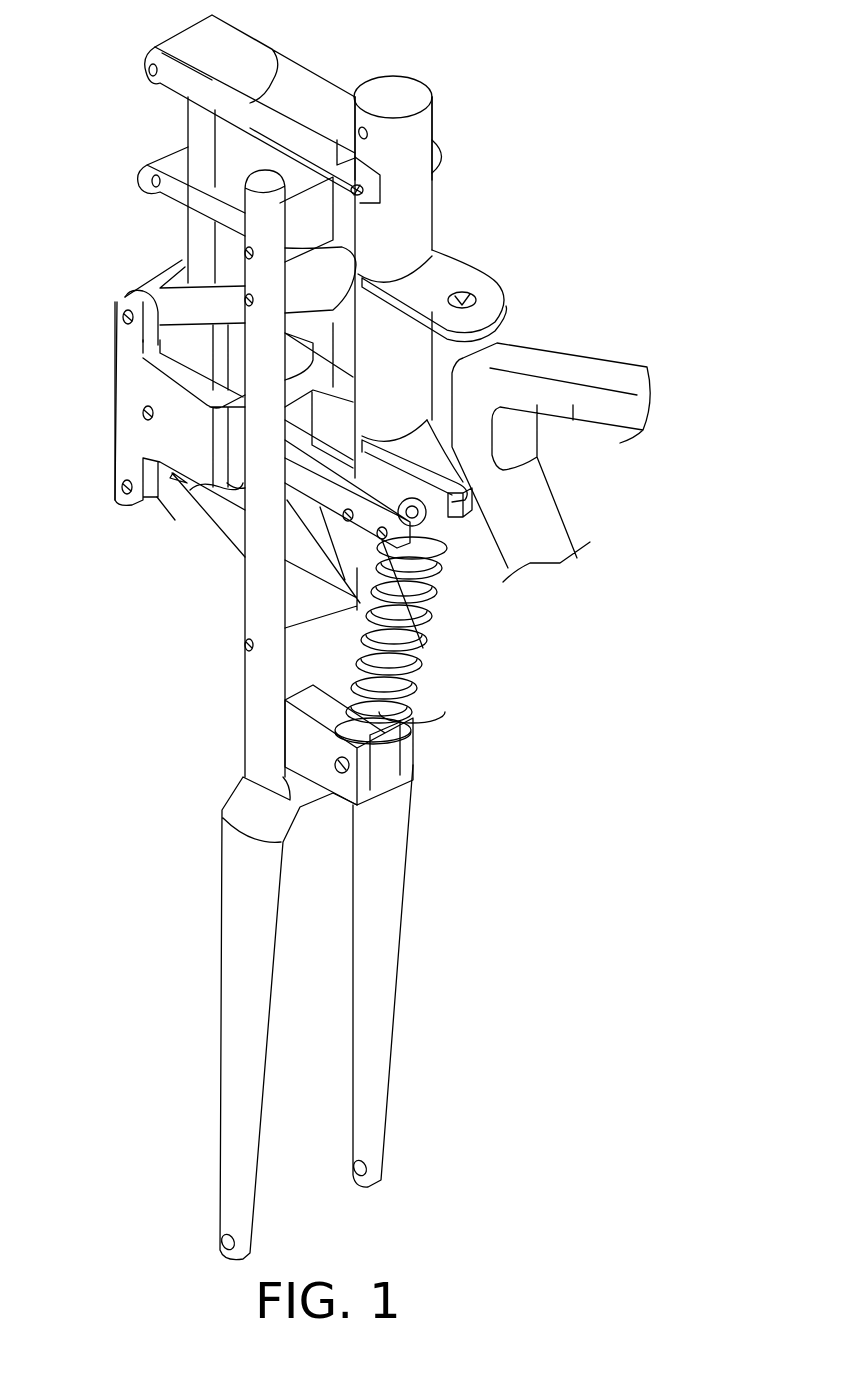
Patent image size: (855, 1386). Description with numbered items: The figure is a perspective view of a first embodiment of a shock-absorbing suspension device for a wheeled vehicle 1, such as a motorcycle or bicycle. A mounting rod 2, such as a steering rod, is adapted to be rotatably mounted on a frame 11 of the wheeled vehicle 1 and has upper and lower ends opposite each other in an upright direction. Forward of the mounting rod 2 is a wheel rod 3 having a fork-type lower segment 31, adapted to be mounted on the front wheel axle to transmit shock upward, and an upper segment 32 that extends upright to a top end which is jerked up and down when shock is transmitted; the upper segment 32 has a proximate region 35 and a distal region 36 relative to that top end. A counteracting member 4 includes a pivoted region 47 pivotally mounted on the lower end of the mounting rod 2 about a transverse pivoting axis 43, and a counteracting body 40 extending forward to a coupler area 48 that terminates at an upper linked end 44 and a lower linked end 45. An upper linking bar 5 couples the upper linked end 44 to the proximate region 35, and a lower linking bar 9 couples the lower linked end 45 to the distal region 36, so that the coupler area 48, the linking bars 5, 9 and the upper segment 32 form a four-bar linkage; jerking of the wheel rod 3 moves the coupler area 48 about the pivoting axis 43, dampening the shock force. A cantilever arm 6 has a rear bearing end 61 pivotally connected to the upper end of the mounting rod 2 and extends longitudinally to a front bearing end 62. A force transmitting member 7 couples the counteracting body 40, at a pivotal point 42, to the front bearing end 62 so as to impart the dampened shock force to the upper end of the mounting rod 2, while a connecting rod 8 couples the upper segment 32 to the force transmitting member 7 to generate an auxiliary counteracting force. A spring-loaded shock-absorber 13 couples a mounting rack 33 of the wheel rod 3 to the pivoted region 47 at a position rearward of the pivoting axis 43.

The wheeled vehicle 1 is at (582, 340).
The frame 11 is at (573, 407).
The mounting rod 2 is at (437, 198).
The rear bearing end 61 is at (387, 173).
The cantilever arm 6 is at (320, 66).
The front bearing end 62 is at (152, 49).
The force transmitting member 7 is at (181, 127).
The connecting rod 8 is at (183, 192).
The upper linking bar 5 is at (133, 263).
The proximate region 35 is at (245, 305).
The distal region 36 is at (245, 647).
The upper linked end 44 is at (120, 308).
The counteracting member 4 is at (112, 437).
The pivotal point 42 is at (144, 408).
The coupler area 48 is at (133, 427).
The lower linked end 45 is at (126, 493).
The counteracting body 40 is at (203, 477).
The lower linking bar 9 is at (154, 535).
The pivoted region 47 is at (423, 640).
The spring-loaded shock-absorber 13 is at (424, 656).
The pivoting axis 43 is at (420, 627).
The wheel rod 3 is at (203, 862).
The lower segment 31 is at (227, 937).
The upper segment 32 is at (247, 545).
The mounting rack 33 is at (355, 765).